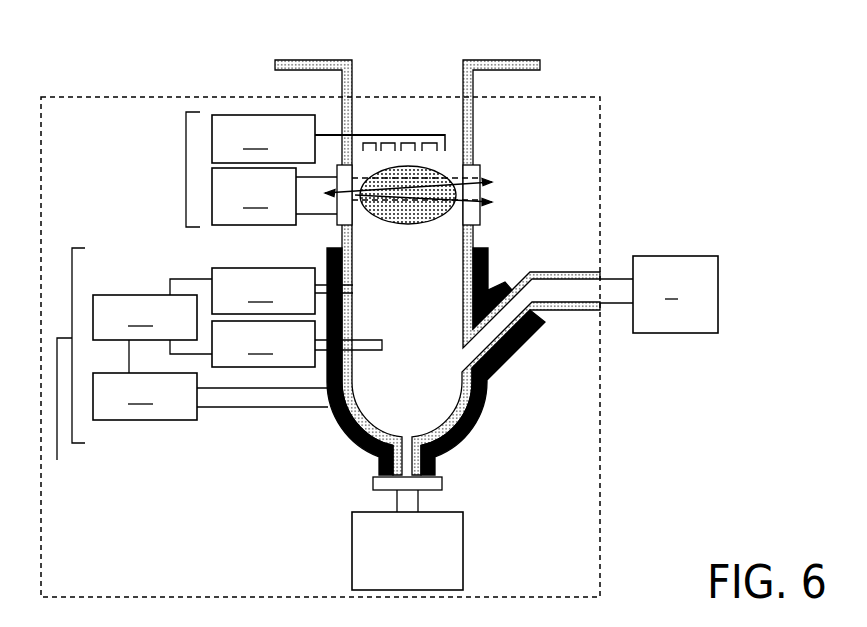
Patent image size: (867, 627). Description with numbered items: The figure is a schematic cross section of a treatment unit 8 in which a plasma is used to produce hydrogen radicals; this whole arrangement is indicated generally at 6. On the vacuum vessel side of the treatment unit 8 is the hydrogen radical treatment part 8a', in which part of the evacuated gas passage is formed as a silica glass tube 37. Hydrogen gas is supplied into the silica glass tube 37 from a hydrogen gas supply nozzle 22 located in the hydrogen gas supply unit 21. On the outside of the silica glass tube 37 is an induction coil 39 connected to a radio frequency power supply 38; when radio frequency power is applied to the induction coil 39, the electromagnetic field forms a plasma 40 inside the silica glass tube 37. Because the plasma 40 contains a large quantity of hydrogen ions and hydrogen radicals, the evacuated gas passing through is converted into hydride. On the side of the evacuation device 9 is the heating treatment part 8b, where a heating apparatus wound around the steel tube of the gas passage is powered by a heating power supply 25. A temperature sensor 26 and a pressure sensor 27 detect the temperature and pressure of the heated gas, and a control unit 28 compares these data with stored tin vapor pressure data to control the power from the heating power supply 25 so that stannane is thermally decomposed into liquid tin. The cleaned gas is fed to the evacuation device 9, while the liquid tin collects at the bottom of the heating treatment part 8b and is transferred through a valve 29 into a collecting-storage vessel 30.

The cleaning apparatus 6 is at (438, 57).
The treatment unit 8 is at (600, 123).
The hydrogen radical treatment part 8a' is at (171, 169).
The heating treatment part 8b is at (66, 366).
The evacuation device 9 is at (659, 294).
The hydrogen gas supply unit 21 is at (263, 139).
The hydrogen gas supply nozzle 22 is at (425, 128).
The heating power supply 25 is at (210, 380).
The temperature sensor 26 is at (297, 344).
The pressure sensor 27 is at (282, 291).
The control unit 28 is at (152, 316).
The valve 29 is at (445, 483).
The collecting-storage vessel 30 is at (465, 533).
The silica glass tube 37 is at (482, 218).
The radio frequency power supply 38 is at (274, 196).
The induction coil 39 is at (500, 203).
The plasma 40 is at (380, 225).